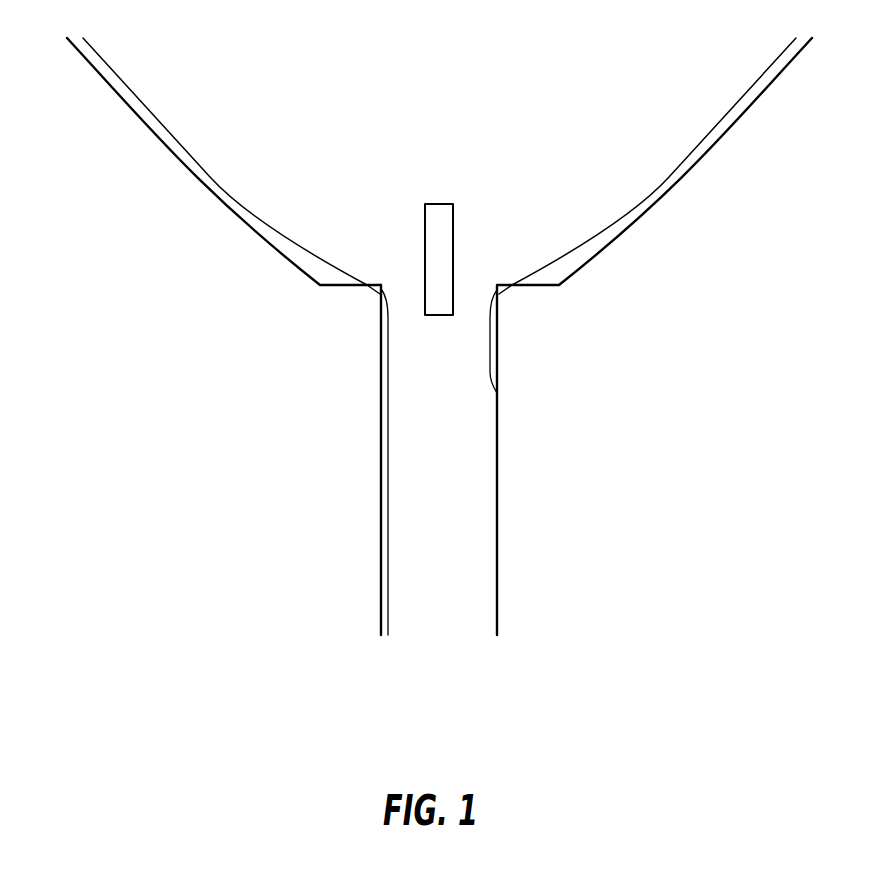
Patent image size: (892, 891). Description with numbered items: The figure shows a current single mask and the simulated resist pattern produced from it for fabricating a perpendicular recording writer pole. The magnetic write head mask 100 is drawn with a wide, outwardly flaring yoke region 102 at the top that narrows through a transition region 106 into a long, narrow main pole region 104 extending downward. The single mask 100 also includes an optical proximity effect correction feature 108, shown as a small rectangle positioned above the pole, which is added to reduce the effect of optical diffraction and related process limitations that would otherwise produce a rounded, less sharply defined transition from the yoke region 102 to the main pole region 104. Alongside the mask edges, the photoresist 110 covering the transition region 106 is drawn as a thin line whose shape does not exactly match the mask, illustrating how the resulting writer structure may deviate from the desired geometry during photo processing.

The magnetic write head mask 100 is at (583, 288).
The yoke region 102 is at (228, 222).
The main pole region 104 is at (376, 465).
The transition region 106 is at (492, 320).
The optical proximity effect correction feature 108 is at (424, 221).
The photoresist 110 is at (563, 249).